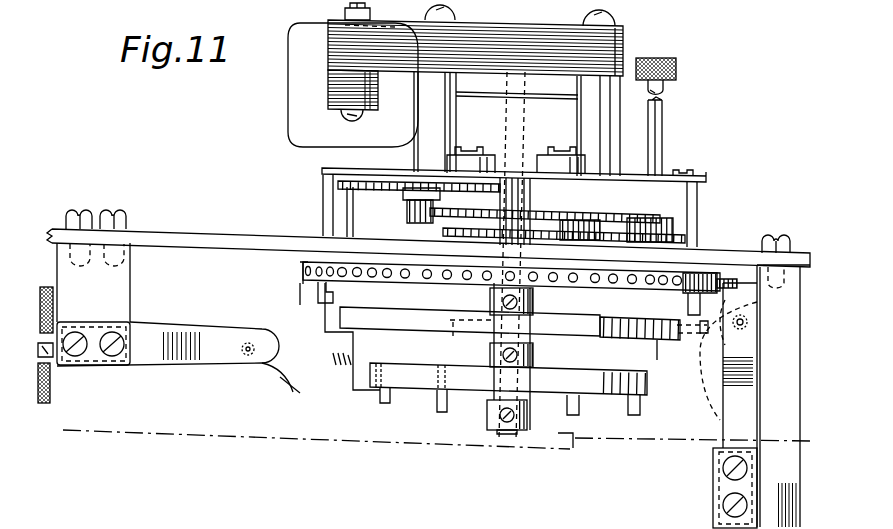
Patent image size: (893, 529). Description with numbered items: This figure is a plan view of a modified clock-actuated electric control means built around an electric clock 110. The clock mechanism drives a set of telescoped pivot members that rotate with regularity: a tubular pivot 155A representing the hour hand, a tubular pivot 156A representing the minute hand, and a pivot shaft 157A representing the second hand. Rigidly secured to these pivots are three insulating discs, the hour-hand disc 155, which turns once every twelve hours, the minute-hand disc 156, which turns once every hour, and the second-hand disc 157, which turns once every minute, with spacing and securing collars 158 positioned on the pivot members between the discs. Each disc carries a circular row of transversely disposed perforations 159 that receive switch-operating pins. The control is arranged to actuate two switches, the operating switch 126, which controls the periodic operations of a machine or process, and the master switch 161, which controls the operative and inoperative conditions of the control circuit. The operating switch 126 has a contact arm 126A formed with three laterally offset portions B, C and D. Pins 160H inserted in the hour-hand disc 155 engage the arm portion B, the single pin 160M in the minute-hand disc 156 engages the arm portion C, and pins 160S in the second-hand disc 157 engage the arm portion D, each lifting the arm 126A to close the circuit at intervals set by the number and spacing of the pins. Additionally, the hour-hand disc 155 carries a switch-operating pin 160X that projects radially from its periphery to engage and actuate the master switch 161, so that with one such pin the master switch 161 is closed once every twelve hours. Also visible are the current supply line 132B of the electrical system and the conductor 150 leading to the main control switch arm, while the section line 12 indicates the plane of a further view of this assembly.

The electric clock 110 is at (296, 149).
The conductor 150 is at (57, 277).
The current supply line 132B is at (47, 395).
The operating switch 126 is at (190, 318).
The contact arm 126A is at (352, 353).
The hour-hand disc 155 is at (300, 263).
The tubular pivot 155A is at (487, 356).
The minute-hand disc 156 is at (378, 322).
The tubular pivot 156A is at (453, 337).
The second-hand disc 157 is at (380, 394).
The pivot shaft 157A is at (526, 363).
The spacing and securing collars 158 is at (534, 300).
The perforations 159 is at (658, 284).
The switch-operating pins 160H is at (333, 282).
The switch-operating pin 160M is at (655, 343).
The switch-operating pins 160S is at (578, 405).
The switch-operating pin 160X is at (731, 282).
The master switch 161 is at (708, 448).
The section line 12 is at (62, 430).
The contact arm portion B is at (318, 286).
The contact arm portion C is at (300, 393).
The contact arm portion D is at (370, 393).